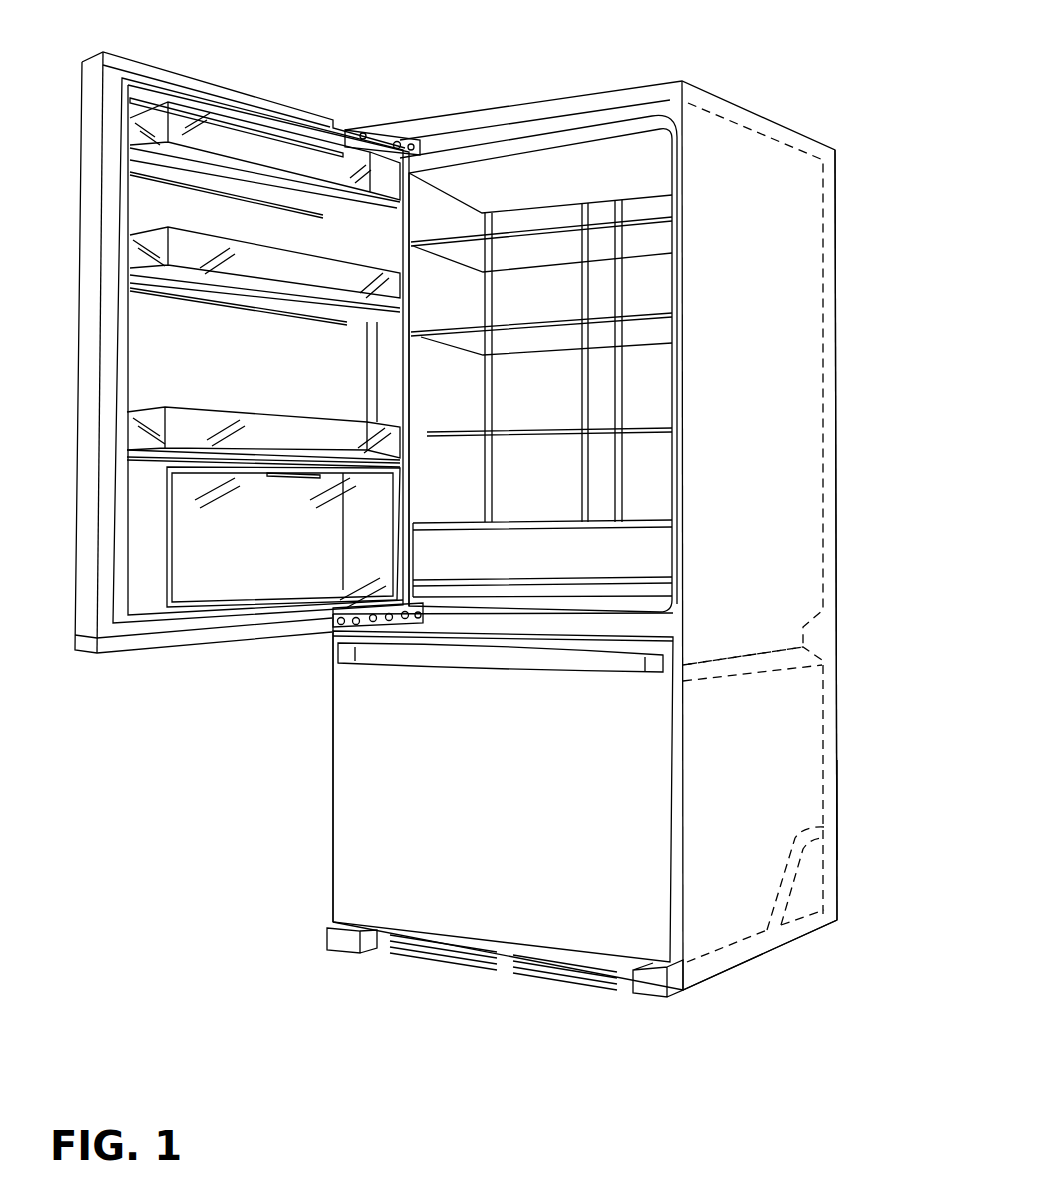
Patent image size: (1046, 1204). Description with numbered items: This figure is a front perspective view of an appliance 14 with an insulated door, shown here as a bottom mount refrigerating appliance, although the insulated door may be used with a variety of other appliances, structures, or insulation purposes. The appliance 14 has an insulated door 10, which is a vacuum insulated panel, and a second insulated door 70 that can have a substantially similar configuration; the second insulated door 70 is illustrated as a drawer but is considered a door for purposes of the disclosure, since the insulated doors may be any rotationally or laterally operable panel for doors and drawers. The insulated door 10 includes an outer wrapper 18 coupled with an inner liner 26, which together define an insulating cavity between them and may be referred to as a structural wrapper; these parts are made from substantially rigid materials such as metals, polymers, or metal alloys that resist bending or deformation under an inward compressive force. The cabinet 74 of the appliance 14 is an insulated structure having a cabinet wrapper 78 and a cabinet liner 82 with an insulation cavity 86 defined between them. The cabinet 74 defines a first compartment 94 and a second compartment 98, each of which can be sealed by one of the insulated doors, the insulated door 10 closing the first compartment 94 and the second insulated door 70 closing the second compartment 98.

The insulated door 10 is at (70, 271).
The appliance 14 is at (788, 90).
The outer wrapper 18 is at (74, 485).
The inner liner 26 is at (107, 617).
The second insulated door 70 is at (328, 766).
The cabinet 74 is at (845, 565).
The cabinet wrapper 78 is at (839, 808).
The cabinet liner 82 is at (824, 712).
The insulation cavity 86 is at (814, 870).
The first compartment 94 is at (652, 382).
The second compartment 98 is at (728, 902).